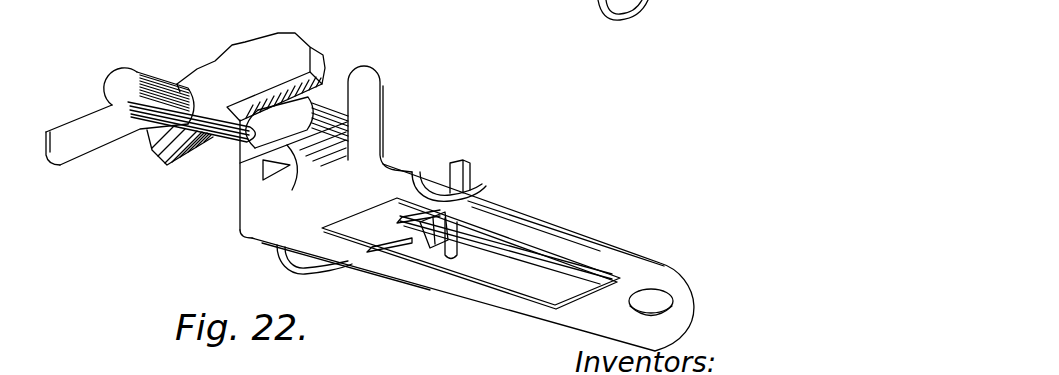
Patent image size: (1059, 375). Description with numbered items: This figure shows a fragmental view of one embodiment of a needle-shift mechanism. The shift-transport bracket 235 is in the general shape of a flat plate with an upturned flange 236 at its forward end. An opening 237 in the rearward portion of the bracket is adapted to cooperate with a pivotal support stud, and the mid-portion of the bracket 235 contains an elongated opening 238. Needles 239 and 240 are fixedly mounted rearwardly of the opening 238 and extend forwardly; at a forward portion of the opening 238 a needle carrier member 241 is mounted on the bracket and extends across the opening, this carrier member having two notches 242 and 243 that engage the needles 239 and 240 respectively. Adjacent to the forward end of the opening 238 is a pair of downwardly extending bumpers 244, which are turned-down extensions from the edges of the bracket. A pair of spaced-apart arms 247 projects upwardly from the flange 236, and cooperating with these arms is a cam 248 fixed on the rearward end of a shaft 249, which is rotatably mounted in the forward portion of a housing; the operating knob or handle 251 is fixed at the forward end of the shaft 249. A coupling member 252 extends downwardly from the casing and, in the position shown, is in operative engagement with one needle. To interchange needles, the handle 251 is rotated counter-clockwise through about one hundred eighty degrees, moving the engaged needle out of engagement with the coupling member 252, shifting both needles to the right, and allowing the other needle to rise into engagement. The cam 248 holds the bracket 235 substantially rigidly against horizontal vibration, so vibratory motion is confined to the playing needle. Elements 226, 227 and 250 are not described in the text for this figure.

The element 226 is at (443, 0).
The element 227 is at (532, 5).
The shift-transport bracket 235 is at (553, 220).
The upturned flange 236 is at (382, 140).
The opening 237 is at (671, 299).
The elongated opening 238 is at (562, 258).
The needle 239 is at (550, 285).
The needle 240 is at (520, 250).
The needle carrier member 241 is at (437, 250).
The notch 242 is at (440, 228).
The notch 243 is at (477, 203).
The bumpers 244 is at (433, 190).
The arms 247 is at (380, 100).
The cam 248 is at (247, 208).
The shaft 249 is at (207, 108).
The block 250 is at (292, 53).
The operating knob or handle 251 is at (100, 98).
The coupling member 252 is at (473, 177).